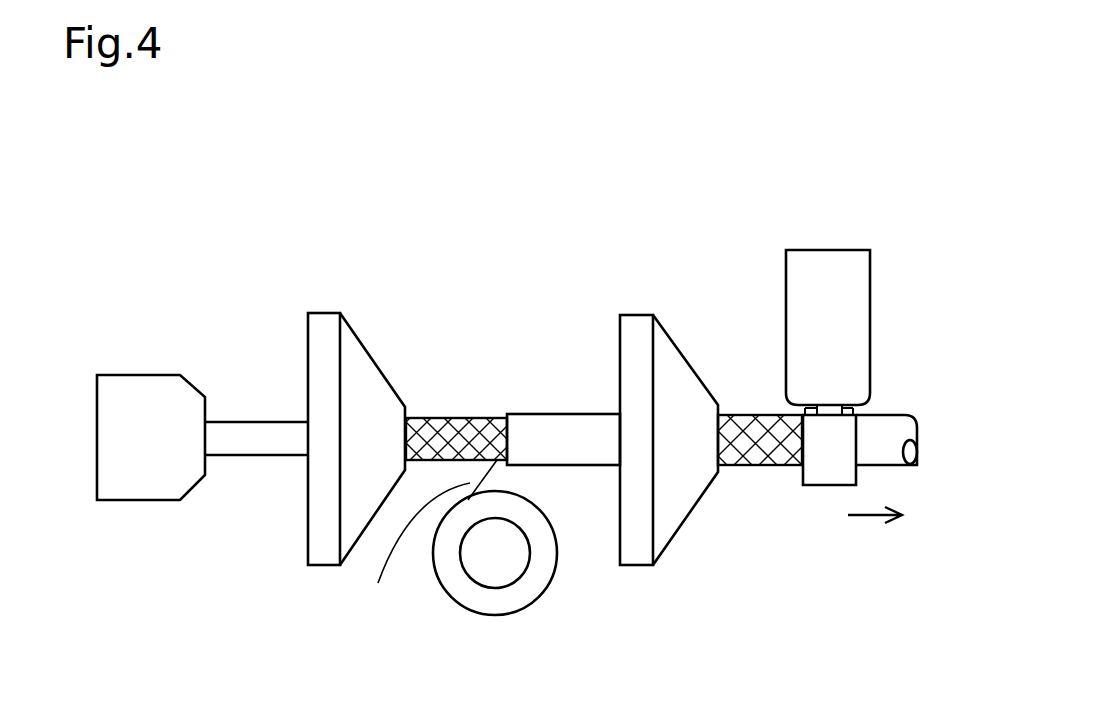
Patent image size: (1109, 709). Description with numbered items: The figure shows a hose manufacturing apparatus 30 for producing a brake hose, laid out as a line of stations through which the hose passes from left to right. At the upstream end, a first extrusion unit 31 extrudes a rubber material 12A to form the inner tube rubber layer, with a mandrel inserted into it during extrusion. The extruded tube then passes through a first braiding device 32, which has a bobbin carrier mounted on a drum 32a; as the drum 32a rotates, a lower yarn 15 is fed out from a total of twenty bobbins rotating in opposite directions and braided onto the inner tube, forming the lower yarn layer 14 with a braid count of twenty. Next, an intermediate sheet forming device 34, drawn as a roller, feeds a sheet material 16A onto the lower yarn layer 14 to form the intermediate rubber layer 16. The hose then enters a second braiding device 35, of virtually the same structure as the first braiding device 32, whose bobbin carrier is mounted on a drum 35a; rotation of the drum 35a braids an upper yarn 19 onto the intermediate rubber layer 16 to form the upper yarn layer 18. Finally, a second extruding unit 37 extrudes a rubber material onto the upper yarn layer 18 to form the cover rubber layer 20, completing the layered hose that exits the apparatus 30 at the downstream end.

The hose manufacturing apparatus 30 is at (509, 239).
The first extrusion unit 31 is at (128, 383).
The rubber material 12A is at (252, 445).
The first braiding device 32 is at (311, 409).
The drum 32a is at (320, 360).
The lower yarn layer 14 is at (456, 389).
The lower yarn 15 is at (420, 418).
The intermediate rubber layer 16 is at (560, 433).
The sheet material 16A is at (427, 538).
The intermediate sheet forming device 34 is at (520, 612).
The second braiding device 35 is at (622, 405).
The drum 35a is at (635, 358).
The upper yarn layer 18 is at (760, 434).
The upper yarn 19 is at (763, 457).
The second extruding unit 37 is at (817, 260).
The cover rubber layer 20 is at (882, 427).